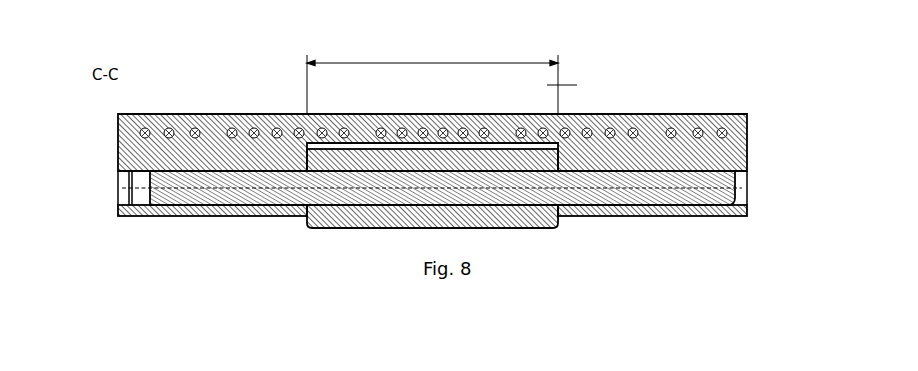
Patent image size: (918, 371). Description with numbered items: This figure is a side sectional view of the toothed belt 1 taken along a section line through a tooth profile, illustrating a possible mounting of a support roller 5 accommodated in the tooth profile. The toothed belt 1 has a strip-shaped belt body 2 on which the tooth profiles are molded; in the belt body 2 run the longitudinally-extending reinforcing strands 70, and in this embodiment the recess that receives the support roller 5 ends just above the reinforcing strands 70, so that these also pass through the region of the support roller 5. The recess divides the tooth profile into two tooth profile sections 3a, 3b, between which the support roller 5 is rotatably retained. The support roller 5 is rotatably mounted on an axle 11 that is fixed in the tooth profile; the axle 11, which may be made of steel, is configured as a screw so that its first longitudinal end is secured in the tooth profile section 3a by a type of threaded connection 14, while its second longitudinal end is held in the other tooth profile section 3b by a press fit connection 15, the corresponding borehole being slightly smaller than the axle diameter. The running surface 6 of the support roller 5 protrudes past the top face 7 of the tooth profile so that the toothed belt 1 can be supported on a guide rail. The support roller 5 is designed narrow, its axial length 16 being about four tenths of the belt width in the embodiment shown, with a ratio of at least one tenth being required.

The toothed belt 1 is at (263, 69).
The belt body 2 is at (432, 118).
The tooth profile section 3a is at (210, 273).
The tooth profile section 3b is at (677, 270).
The support roller 5 is at (316, 229).
The running surface 6 is at (416, 258).
The top face 7 is at (731, 224).
The axle 11 is at (361, 163).
The threaded connection 14 is at (219, 224).
The press fit connection 15 is at (677, 270).
The axial length 16 is at (442, 78).
The reinforcing strands 70 is at (199, 113).